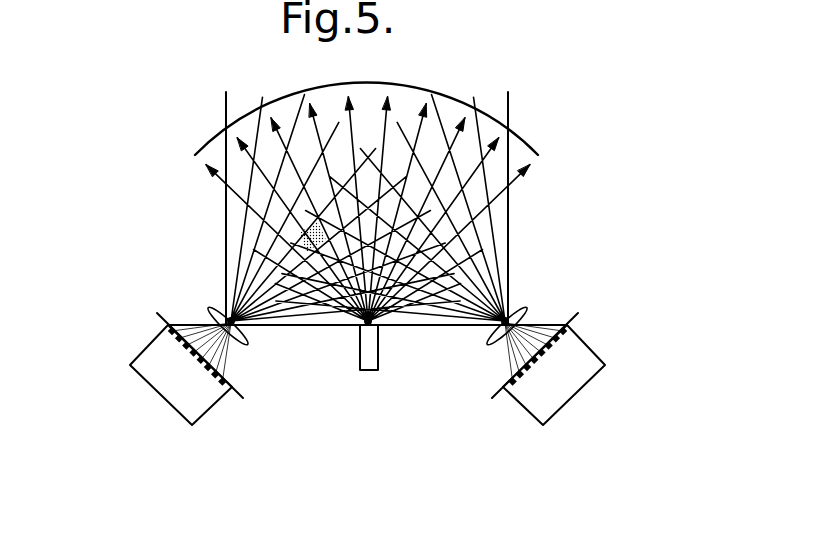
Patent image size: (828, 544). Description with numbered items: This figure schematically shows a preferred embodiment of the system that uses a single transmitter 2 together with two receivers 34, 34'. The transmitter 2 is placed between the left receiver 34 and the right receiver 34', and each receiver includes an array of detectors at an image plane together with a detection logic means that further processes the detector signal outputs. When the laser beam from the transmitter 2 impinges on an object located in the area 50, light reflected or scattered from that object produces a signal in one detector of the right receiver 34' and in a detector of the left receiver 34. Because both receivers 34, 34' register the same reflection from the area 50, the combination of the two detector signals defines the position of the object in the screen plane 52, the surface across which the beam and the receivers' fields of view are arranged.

The transmitter 2 is at (371, 372).
The receiver 34 is at (154, 382).
The receiver 34' is at (583, 379).
The area 50 is at (308, 246).
The screen plane 52 is at (483, 123).